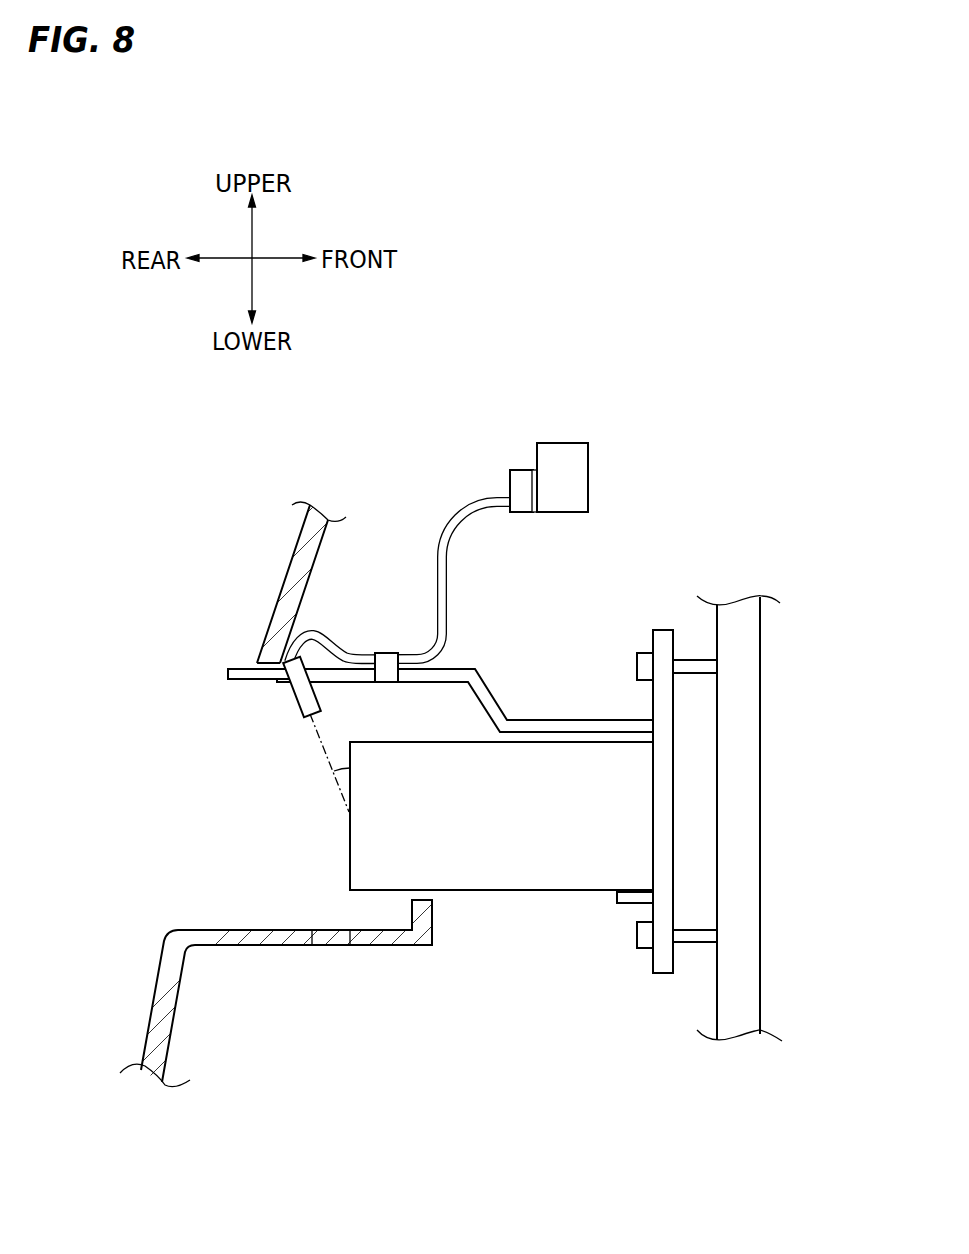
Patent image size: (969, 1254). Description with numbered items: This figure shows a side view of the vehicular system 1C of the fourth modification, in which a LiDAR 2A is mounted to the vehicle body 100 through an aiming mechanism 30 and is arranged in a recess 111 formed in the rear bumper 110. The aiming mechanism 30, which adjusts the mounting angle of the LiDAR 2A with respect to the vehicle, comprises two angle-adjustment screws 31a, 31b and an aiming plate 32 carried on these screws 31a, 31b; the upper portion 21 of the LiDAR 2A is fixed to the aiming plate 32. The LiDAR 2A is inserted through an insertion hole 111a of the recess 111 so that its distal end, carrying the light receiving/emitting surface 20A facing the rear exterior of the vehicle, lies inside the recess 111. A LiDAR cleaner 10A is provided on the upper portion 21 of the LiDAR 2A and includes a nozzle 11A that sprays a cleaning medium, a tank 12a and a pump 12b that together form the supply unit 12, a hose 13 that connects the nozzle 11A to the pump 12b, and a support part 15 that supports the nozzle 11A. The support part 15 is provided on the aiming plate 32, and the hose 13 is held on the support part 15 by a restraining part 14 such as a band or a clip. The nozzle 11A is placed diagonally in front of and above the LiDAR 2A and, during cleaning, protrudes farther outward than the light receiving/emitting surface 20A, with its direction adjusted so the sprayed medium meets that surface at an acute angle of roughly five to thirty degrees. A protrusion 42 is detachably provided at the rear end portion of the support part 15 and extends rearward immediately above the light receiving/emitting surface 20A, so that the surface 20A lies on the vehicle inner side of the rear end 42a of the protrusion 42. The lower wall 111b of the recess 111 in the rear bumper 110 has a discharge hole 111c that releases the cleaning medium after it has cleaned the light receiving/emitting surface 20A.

The vehicular system 1C is at (615, 289).
The LiDAR cleaner 10A is at (442, 409).
The tank and pump 12 is at (560, 386).
The tank 12a is at (562, 447).
The pump 12b is at (523, 472).
The hose 13 is at (438, 588).
The restraining part 14 is at (392, 652).
The support part 15 is at (453, 667).
The nozzle 11A is at (292, 705).
The protrusion 42 is at (243, 667).
The rear end 42a is at (228, 674).
The LiDAR 2A is at (322, 857).
The light receiving/emitting surface 20A is at (349, 832).
The upper portion 21 is at (450, 741).
The aiming mechanism 30 is at (688, 584).
The screw 31a is at (636, 666).
The screw 31b is at (637, 938).
The aiming plate 32 is at (660, 631).
The vehicle body 100 is at (742, 766).
The rear bumper 110 is at (300, 545).
The recess 111 is at (262, 800).
The insertion hole 111a is at (427, 893).
The lower wall 111b is at (226, 931).
The discharge hole 111c is at (333, 946).